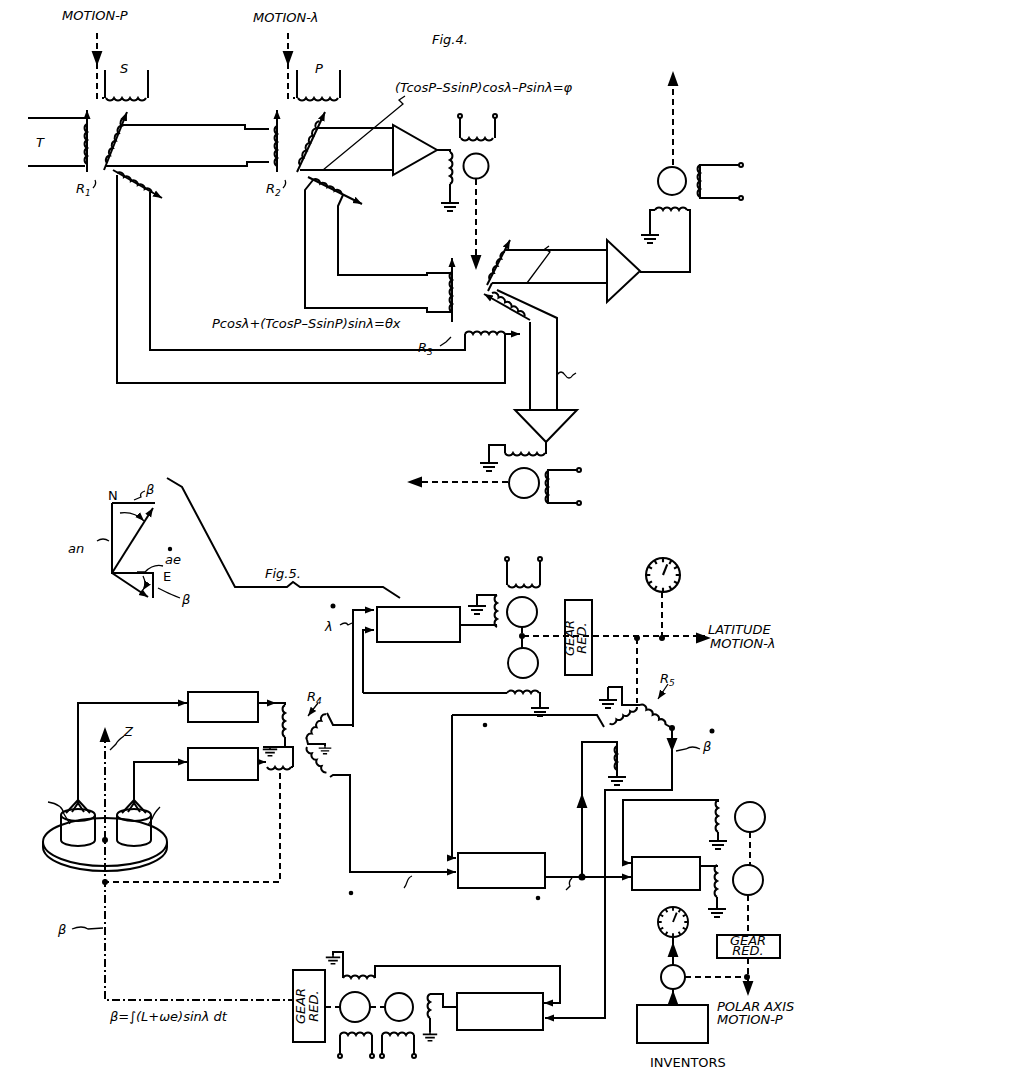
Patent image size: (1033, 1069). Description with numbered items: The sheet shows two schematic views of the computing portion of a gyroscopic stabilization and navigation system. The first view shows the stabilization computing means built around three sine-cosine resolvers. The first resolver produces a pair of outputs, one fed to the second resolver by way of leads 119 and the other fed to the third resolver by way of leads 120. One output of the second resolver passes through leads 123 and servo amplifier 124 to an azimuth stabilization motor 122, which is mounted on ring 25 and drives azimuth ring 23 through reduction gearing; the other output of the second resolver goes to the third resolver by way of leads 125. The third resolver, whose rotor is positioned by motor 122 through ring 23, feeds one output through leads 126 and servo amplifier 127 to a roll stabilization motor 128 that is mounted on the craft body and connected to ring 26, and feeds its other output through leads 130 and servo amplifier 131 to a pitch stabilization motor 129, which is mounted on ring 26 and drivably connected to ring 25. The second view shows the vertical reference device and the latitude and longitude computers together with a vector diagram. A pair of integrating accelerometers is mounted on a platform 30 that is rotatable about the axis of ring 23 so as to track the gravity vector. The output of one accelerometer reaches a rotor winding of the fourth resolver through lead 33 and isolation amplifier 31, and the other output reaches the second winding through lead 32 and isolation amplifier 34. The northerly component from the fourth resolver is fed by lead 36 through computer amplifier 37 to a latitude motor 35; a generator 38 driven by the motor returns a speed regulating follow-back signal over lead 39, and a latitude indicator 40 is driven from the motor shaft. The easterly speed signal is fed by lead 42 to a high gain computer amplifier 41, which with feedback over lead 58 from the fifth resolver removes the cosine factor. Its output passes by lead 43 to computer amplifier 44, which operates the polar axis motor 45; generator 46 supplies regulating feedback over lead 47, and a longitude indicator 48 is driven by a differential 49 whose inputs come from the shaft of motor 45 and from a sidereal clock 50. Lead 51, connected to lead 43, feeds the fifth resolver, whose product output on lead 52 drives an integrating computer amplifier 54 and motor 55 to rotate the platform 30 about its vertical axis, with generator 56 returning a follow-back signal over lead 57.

In FIG. 4, the leads 119 is at (134, 152).
In FIG. 4, the leads 120 is at (156, 383).
In FIG. 4, the azimuth stabilization motor 122 is at (490, 171).
In FIG. 4, the leads 123 is at (354, 128).
In FIG. 4, the servo amplifier 124 is at (417, 137).
In FIG. 4, the leads 125 is at (311, 235).
In FIG. 4, the leads 126 is at (547, 261).
In FIG. 4, the servo amplifier 127 is at (631, 288).
In FIG. 4, the roll stabilization motor 128 is at (688, 168).
In FIG. 4, the pitch stabilization motor 129 is at (507, 488).
In FIG. 4, the leads 130 is at (534, 349).
In FIG. 4, the servo amplifier 131 is at (565, 425).
In FIG. 4, the vertical ring 23 is at (480, 233).
In FIG. 4, the ring 25 is at (447, 460).
In FIG. 4, the ring 26 is at (720, 74).
In FIG. 5, the platform 30 is at (158, 843).
In FIG. 5, the isolation amplifier 31 is at (238, 778).
In FIG. 5, the lead 32 is at (78, 734).
In FIG. 5, the lead 33 is at (134, 790).
In FIG. 5, the isolation amplifier 34 is at (236, 692).
In FIG. 5, the latitude motor 35 is at (538, 603).
In FIG. 5, the lead 36 is at (353, 660).
In FIG. 5, the computer amplifier 37 is at (425, 606).
In FIG. 5, the generator 38 is at (508, 670).
In FIG. 5, the lead 39 is at (412, 690).
In FIG. 5, the latitude indicator 40 is at (677, 566).
In FIG. 5, the computer amplifier 41 is at (481, 889).
In FIG. 5, the lead 42 is at (388, 870).
In FIG. 5, the lead 43 is at (610, 888).
In FIG. 5, the computer amplifier 44 is at (659, 857).
In FIG. 5, the polar axis motor 45 is at (755, 870).
In FIG. 5, the generator 46 is at (752, 798).
In FIG. 5, the lead 47 is at (685, 800).
In FIG. 5, the longitude indicator 48 is at (655, 932).
In FIG. 5, the differential 49 is at (660, 974).
In FIG. 5, the sidereal clock 50 is at (640, 1033).
In FIG. 5, the lead 51 is at (580, 811).
In FIG. 5, the lead 52 is at (670, 769).
In FIG. 5, the integrating computer amplifier 54 is at (499, 1030).
In FIG. 5, the motor 55 is at (402, 993).
In FIG. 5, the generator 56 is at (372, 993).
In FIG. 5, the lead 57 is at (485, 966).
In FIG. 5, the feedback lead 58 is at (448, 752).